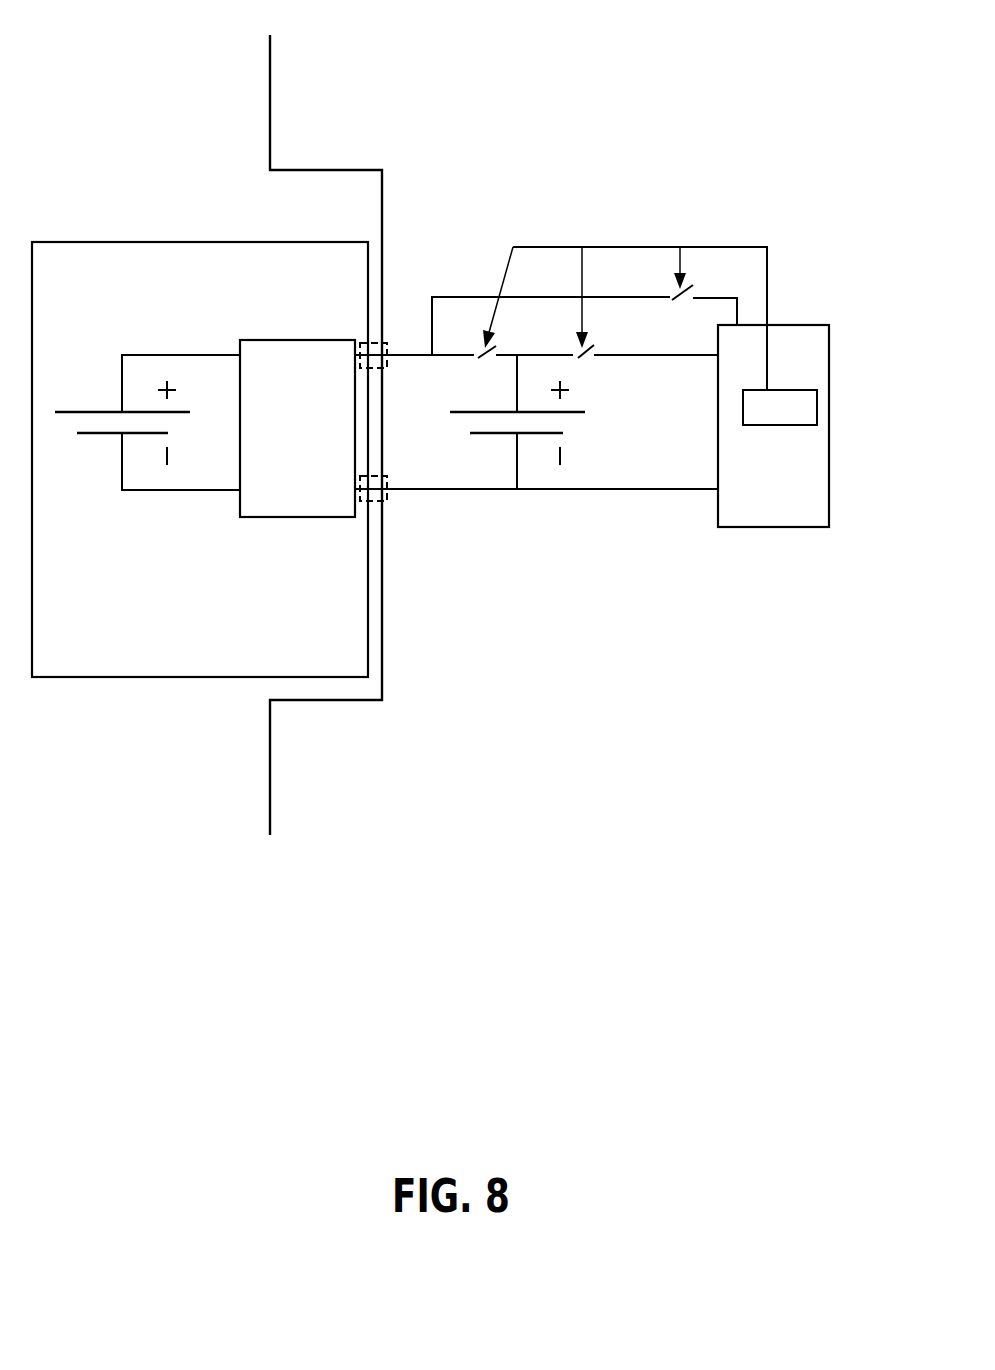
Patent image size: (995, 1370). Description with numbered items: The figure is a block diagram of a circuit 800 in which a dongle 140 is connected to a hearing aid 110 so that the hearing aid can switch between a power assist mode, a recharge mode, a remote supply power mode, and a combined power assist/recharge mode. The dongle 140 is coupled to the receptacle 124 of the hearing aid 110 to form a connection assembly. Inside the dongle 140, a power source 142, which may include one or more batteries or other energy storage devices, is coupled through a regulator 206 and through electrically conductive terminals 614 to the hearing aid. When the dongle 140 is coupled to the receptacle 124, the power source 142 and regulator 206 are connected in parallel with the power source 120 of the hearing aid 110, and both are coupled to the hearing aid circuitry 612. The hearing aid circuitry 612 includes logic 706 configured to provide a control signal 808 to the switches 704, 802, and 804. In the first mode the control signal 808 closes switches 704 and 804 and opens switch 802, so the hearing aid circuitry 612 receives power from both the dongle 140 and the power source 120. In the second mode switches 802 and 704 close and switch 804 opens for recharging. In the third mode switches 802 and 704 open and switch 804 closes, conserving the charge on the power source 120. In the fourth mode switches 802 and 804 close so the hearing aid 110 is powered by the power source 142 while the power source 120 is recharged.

The circuit 800 is at (226, 74).
The hearing aid 110 is at (583, 168).
The receptacle 124 is at (383, 248).
The dongle 140 is at (165, 242).
The regulator 206 is at (297, 340).
The power source 142 is at (123, 490).
The electrically conductive terminals 614 is at (386, 368).
The second switch 802 is at (480, 358).
The switch 704 is at (580, 358).
The third switch 804 is at (676, 300).
The control signal 808 is at (723, 247).
The power source 120 is at (568, 415).
The hearing aid circuitry 612 is at (808, 325).
The logic 706 is at (818, 406).